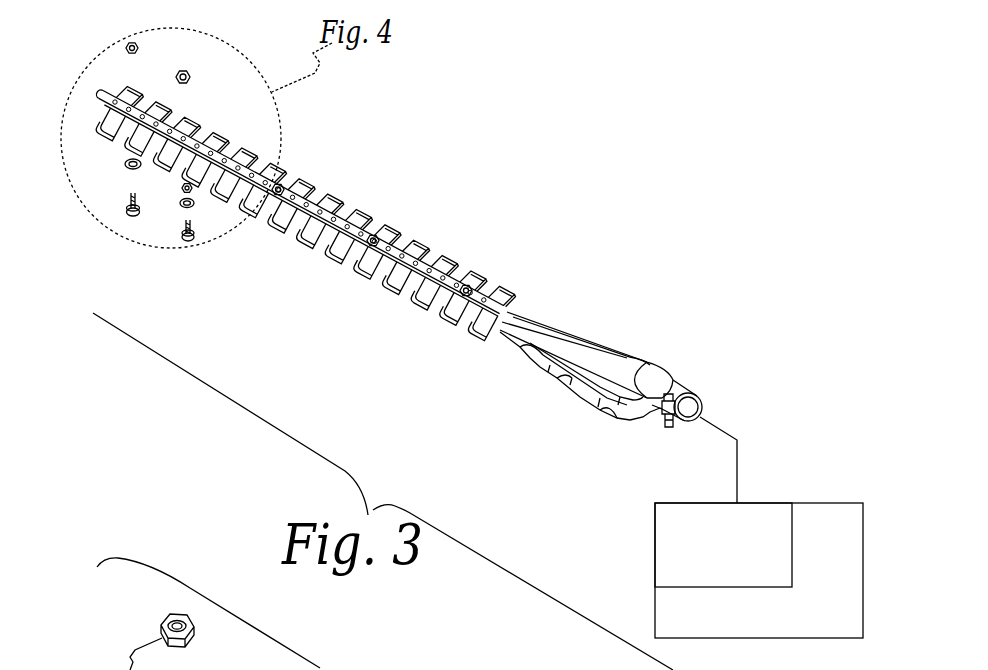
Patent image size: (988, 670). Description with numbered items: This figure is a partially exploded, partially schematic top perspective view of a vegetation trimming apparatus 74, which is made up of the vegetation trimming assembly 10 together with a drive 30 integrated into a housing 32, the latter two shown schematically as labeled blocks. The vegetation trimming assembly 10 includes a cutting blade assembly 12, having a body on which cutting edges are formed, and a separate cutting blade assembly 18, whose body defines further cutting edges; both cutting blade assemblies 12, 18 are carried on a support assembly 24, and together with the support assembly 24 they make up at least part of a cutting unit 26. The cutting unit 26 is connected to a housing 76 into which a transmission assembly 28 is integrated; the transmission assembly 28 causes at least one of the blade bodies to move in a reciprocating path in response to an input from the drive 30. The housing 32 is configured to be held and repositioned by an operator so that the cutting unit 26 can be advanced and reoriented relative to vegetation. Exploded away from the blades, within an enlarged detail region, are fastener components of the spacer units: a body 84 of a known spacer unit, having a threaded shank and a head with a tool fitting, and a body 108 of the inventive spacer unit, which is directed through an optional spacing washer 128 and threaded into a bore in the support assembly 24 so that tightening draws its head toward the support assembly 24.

The vegetation trimming assembly 10 is at (650, 303).
The cutting blade assembly 12 is at (375, 218).
The cutting blade assembly 18 is at (366, 260).
The support assembly 24 is at (118, 100).
The cutting unit 26 is at (515, 257).
The transmission assembly 28 is at (615, 363).
The drive 30 is at (740, 575).
The housing 32 is at (850, 628).
The vegetation trimming apparatus 74 is at (770, 323).
The housing 76 is at (635, 417).
The body 84 is at (197, 228).
The body 108 is at (131, 208).
The spacing washer 128 is at (124, 164).